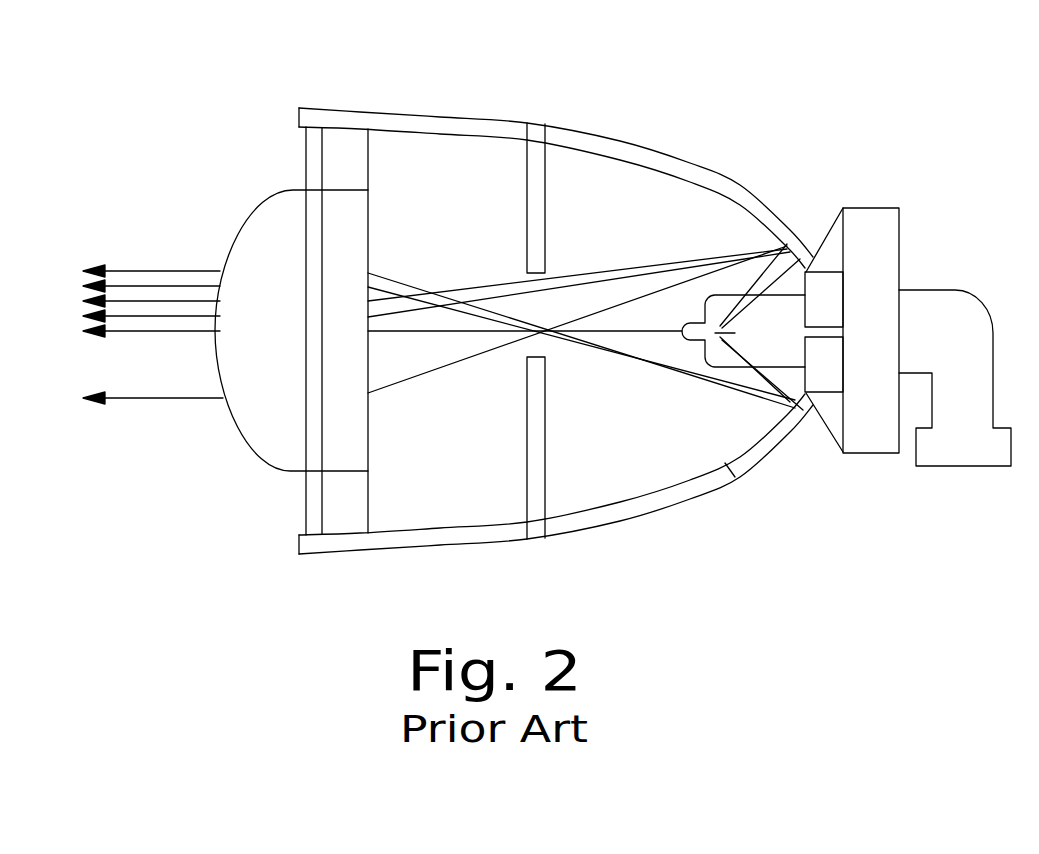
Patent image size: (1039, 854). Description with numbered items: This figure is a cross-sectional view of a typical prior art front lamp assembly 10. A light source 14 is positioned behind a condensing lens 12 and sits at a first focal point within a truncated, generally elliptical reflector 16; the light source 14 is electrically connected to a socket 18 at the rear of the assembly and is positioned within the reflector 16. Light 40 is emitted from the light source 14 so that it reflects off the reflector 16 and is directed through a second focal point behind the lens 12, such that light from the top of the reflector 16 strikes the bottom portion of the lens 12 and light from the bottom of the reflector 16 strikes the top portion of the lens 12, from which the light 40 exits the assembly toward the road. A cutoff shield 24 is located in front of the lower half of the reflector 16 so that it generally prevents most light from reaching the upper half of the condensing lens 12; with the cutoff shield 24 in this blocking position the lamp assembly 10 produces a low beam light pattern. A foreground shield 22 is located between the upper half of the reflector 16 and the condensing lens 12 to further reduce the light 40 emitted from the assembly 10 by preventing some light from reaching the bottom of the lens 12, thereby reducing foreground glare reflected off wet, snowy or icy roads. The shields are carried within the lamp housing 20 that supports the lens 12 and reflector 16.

The front lamp assembly 10 is at (725, 82).
The condensing lens 12 is at (260, 458).
The light source 14 is at (777, 313).
The reflector 16 is at (733, 477).
The socket 18 is at (872, 258).
The lamp housing 20 is at (433, 539).
The foreground shield 22 is at (546, 166).
The cutoff shield 24 is at (547, 492).
The light 40 is at (165, 272).